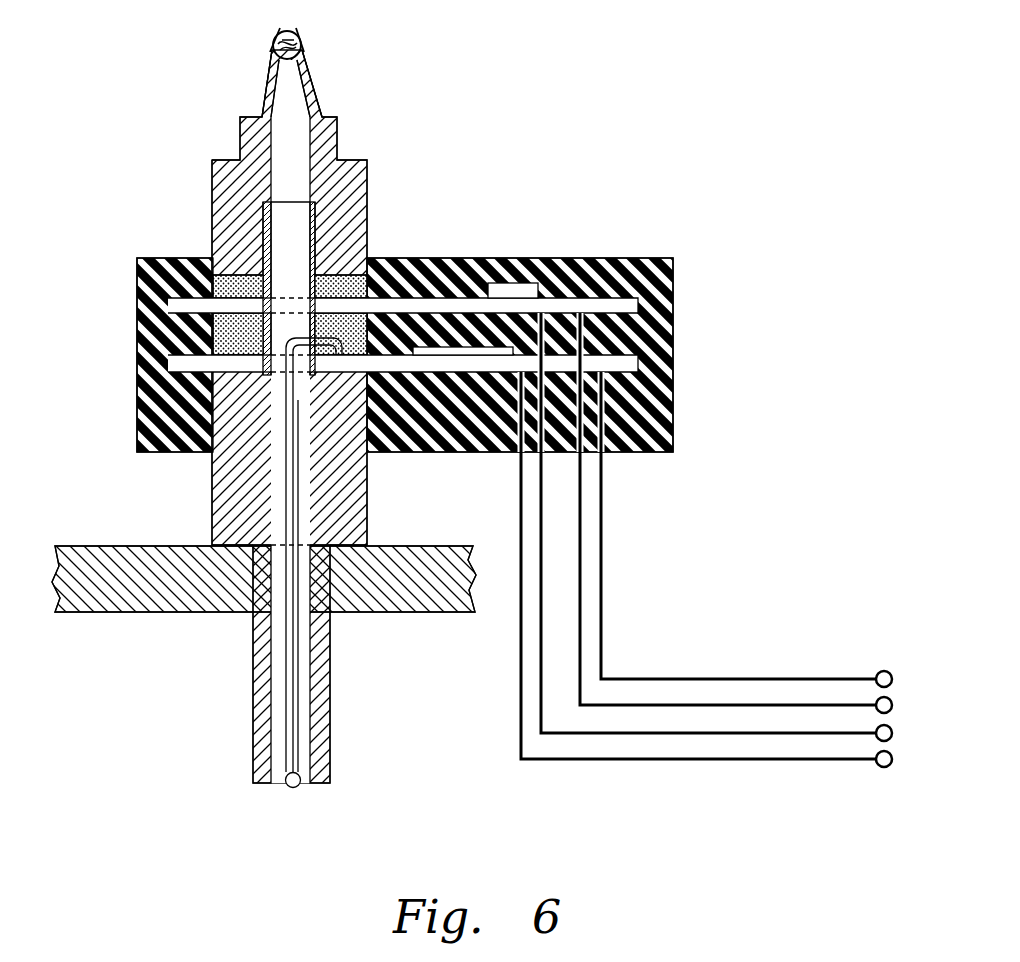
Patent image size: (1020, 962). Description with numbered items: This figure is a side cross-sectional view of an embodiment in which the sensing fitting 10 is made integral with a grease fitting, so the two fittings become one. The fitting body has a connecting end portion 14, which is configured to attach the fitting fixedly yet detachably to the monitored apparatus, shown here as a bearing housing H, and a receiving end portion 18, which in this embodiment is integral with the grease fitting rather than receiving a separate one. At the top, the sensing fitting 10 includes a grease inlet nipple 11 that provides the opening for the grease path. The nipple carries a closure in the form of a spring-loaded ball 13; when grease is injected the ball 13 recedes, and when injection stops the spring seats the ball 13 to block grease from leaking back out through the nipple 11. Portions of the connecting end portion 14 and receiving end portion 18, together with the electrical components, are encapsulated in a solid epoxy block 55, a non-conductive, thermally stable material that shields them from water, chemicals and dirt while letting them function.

The sensing fitting 10 is at (274, 405).
The grease inlet nipple 11 is at (303, 57).
The spring-loaded ball 13 is at (276, 38).
The connecting end portion 14 is at (289, 416).
The receiving end portion 18 is at (355, 200).
The solid epoxy block 55 is at (617, 270).
The bearing housing H is at (88, 572).